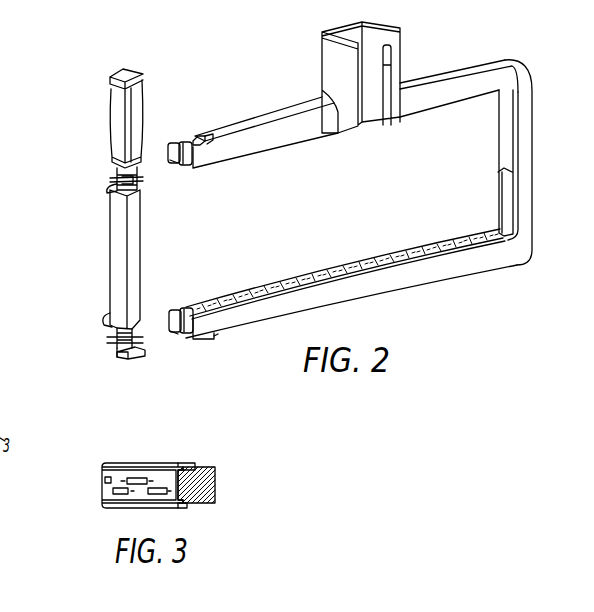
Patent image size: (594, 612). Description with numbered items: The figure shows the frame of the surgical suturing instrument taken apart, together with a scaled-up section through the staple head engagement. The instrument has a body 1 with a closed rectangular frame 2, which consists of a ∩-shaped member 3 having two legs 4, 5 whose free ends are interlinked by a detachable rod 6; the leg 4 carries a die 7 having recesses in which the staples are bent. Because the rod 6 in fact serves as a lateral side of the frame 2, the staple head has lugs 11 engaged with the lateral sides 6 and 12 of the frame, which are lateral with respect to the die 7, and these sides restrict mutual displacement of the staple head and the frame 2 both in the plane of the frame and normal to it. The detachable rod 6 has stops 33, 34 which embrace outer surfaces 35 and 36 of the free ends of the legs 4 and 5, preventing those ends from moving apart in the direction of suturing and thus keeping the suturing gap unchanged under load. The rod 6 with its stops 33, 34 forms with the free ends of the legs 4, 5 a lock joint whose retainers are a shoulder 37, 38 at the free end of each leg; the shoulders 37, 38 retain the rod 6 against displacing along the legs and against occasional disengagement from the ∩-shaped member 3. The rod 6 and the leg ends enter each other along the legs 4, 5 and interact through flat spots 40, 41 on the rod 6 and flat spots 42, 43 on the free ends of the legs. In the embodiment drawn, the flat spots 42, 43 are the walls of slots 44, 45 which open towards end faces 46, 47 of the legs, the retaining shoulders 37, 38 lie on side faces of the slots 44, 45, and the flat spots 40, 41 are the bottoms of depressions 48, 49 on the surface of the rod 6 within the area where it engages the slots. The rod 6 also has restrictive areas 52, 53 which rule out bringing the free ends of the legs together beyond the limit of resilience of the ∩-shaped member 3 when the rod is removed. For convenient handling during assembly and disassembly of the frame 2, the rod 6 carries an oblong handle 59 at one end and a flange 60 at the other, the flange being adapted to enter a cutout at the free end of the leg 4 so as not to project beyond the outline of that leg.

In FIG. 2, the body 1 is at (318, 66).
In FIG. 2, the closed rectangular frame 2 is at (450, 72).
In FIG. 2, the ∩-shaped member 3 is at (538, 140).
In FIG. 2, the leg 4 is at (264, 312).
In FIG. 2, the leg 5 is at (250, 125).
In FIG. 2, the detachable rod 6 is at (104, 254).
In FIG. 2, the die 7 is at (257, 293).
In FIG. 3, the lugs 11 is at (182, 463).
In FIG. 2, the lateral side of the frame 12 is at (523, 180).
In FIG. 3, the lateral side of the frame 12 is at (216, 482).
In FIG. 2, the stop 33 is at (115, 353).
In FIG. 2, the stop 34 is at (115, 170).
In FIG. 2, the outer surface 35 is at (212, 336).
In FIG. 2, the outer surface 36 is at (212, 140).
In FIG. 2, the shoulder 37 is at (190, 339).
In FIG. 2, the shoulder 38 is at (201, 139).
In FIG. 2, the flat spot 40 is at (114, 338).
In FIG. 2, the flat spot 41 is at (112, 178).
In FIG. 2, the flat spot 42 is at (180, 313).
In FIG. 2, the flat spot 43 is at (184, 143).
In FIG. 2, the slot 44 is at (168, 336).
In FIG. 2, the slot 45 is at (172, 163).
In FIG. 2, the end face 46 is at (170, 321).
In FIG. 2, the end face 47 is at (170, 147).
In FIG. 2, the depression 48 is at (132, 338).
In FIG. 2, the depression 49 is at (134, 184).
In FIG. 2, the restrictive area 52 is at (107, 321).
In FIG. 2, the restrictive area 53 is at (110, 190).
In FIG. 2, the oblong handle 59 is at (120, 105).
In FIG. 2, the flange 60 is at (133, 360).